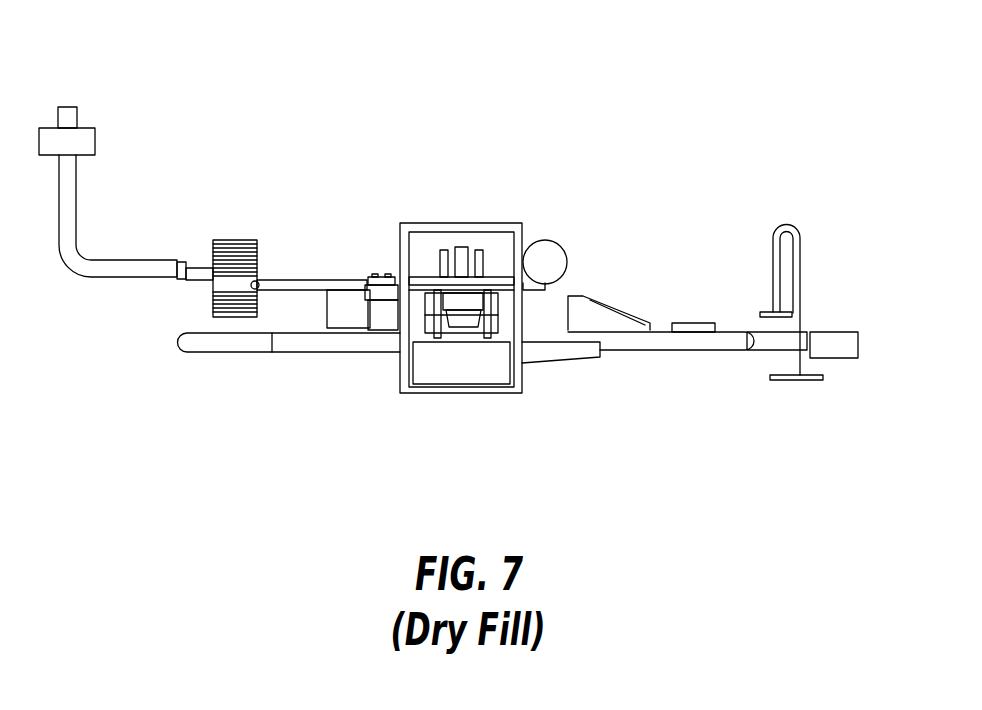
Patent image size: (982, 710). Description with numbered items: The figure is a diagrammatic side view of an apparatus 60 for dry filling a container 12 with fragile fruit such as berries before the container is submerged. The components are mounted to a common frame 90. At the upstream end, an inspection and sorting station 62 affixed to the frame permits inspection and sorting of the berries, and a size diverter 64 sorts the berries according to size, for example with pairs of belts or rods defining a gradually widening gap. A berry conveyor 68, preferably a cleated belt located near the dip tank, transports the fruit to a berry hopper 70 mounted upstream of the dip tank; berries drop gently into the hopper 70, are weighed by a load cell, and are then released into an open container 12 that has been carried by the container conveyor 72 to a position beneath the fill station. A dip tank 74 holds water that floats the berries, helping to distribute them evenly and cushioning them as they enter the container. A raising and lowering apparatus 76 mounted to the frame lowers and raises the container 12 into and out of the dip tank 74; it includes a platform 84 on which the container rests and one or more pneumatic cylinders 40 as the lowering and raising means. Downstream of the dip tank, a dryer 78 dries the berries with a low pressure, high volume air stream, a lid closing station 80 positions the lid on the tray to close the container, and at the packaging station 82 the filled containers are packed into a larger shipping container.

The apparatus 60 is at (245, 80).
The inspection and sorting station 62 is at (95, 143).
The size diverter 64 is at (235, 240).
The berry conveyor 68 is at (310, 278).
The berry hopper 70 is at (383, 275).
The container 12 is at (352, 312).
The container conveyor 72 is at (292, 355).
The frame 90 is at (504, 223).
The pneumatic cylinders 40 is at (461, 247).
The platform 84 is at (445, 340).
The dip tank 74 is at (440, 375).
The raising and lowering apparatus 76 is at (500, 310).
The dryer 78 is at (560, 240).
The lid closing station 80 is at (622, 313).
The packaging station 82 is at (818, 215).